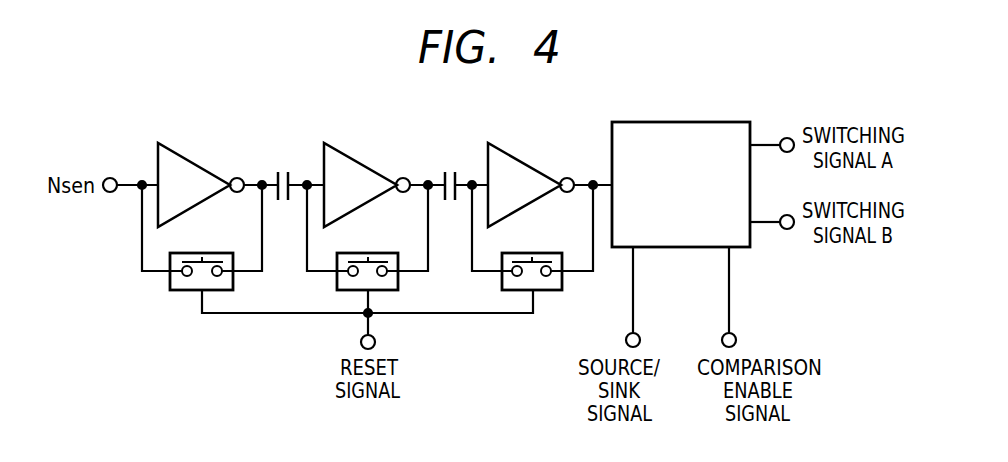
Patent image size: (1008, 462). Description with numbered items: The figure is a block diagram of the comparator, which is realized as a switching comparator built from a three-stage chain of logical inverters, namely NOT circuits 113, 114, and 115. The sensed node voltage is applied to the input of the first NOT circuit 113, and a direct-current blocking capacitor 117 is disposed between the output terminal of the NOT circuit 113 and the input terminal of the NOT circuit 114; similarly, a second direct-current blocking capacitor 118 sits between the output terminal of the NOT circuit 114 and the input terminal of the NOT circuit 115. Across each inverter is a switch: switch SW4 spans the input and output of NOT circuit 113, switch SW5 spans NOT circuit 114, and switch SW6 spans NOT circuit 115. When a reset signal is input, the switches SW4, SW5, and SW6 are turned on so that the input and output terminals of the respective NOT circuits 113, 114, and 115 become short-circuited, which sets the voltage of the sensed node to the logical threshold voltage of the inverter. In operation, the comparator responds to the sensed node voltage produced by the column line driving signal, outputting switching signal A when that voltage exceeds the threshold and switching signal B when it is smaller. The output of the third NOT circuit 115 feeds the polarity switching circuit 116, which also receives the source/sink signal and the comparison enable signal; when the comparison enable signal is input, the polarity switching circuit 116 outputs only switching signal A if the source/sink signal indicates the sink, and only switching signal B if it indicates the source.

The NOT circuit 113 is at (190, 162).
The NOT circuit 114 is at (355, 162).
The NOT circuit 115 is at (522, 162).
The polarity switching circuit 116 is at (702, 122).
The capacitor 117 is at (283, 170).
The capacitor 118 is at (450, 170).
The switch SW4 is at (233, 278).
The switch SW5 is at (398, 278).
The switch SW6 is at (550, 290).